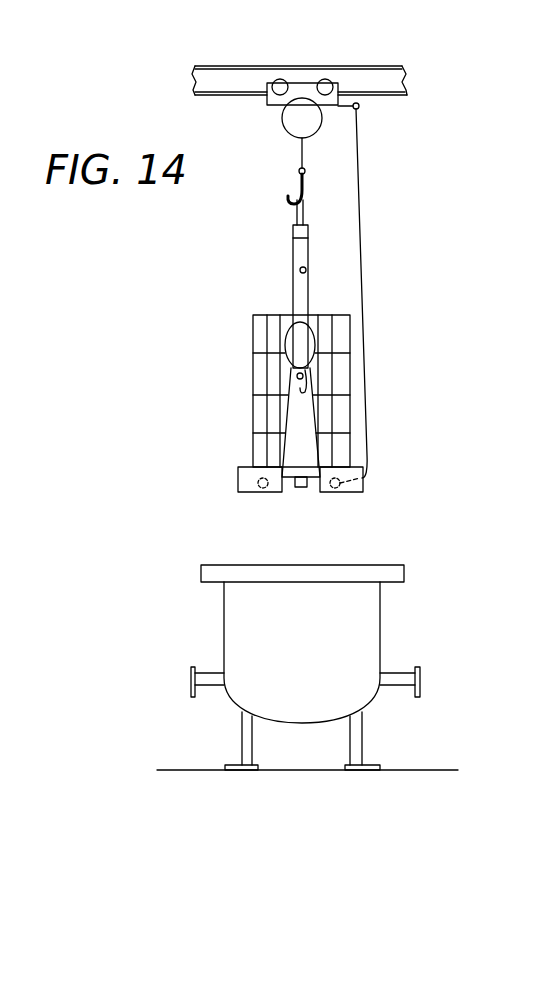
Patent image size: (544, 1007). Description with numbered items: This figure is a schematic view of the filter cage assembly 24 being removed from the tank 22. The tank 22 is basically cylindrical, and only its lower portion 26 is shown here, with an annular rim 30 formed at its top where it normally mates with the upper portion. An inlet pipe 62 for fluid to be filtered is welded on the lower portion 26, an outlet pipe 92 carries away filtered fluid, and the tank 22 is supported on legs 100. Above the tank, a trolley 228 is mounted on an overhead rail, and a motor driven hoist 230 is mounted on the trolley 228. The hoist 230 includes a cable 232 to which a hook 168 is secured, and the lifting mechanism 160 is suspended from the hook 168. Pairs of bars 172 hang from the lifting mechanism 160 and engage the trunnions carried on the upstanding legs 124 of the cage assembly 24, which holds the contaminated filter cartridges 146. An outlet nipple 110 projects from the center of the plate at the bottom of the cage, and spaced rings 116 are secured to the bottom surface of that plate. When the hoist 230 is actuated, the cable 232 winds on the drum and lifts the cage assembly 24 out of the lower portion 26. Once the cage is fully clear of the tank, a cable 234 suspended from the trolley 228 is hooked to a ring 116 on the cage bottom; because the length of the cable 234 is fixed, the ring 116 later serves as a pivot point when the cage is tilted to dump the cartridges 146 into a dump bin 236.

The dump bin 236 is at (404, 86).
The trolley 228 is at (267, 97).
The motor driven hoist 230 is at (292, 126).
The cable 232 is at (298, 153).
The hook 168 is at (312, 186).
The lifting mechanism 160 is at (280, 259).
The bars 172 is at (310, 297).
The filter cartridges 146 is at (267, 298).
The filter cage assembly 24 is at (225, 430).
The cable 234 is at (366, 403).
The upstanding legs 124 is at (310, 446).
The outlet nipple 110 is at (298, 486).
The rings 116 is at (335, 488).
The annular rim 30 is at (410, 569).
The tank 22 is at (402, 631).
The lower portion 26 is at (318, 652).
The inlet pipe 62 is at (211, 687).
The outlet pipe 92 is at (403, 688).
The legs 100 is at (356, 730).